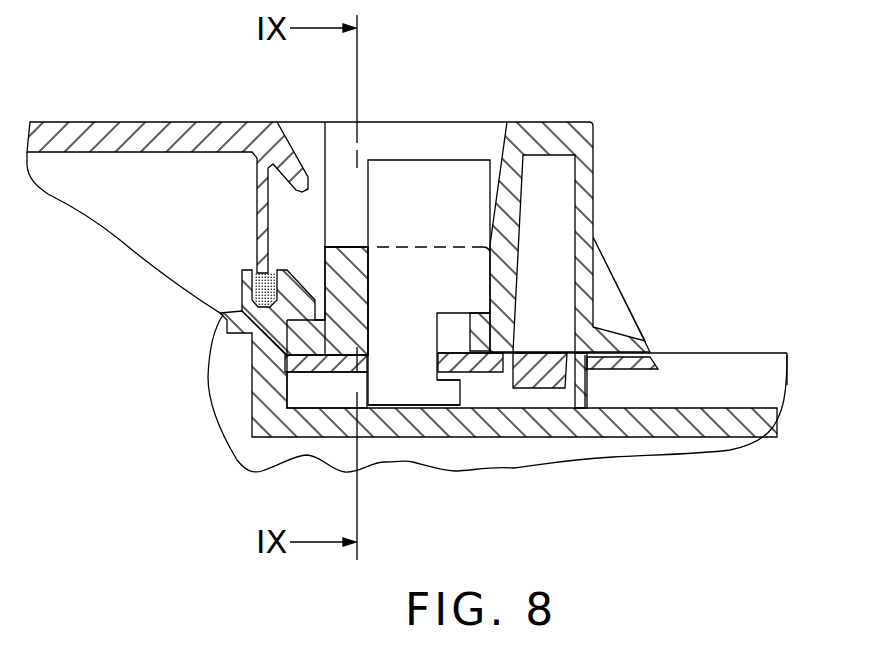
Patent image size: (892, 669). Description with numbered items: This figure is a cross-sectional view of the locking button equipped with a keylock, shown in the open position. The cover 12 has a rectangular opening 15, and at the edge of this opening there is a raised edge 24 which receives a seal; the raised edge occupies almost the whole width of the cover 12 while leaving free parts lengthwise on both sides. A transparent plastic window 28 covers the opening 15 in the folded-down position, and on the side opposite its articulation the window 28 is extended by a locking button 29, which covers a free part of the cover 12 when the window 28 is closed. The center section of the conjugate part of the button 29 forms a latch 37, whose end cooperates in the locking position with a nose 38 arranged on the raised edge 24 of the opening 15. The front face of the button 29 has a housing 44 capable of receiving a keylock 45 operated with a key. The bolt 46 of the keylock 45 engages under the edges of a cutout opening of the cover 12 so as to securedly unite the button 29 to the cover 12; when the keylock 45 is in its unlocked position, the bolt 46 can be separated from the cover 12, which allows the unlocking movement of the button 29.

The cover 12 is at (688, 428).
The rectangular opening 15 is at (192, 180).
The raised edge 24 is at (258, 273).
The window 28 is at (117, 133).
The locking button 29 is at (583, 140).
The latch 37 is at (358, 310).
The nose 38 is at (300, 290).
The housing 44 is at (392, 152).
The keylock 45 is at (413, 172).
The bolt 46 is at (414, 441).